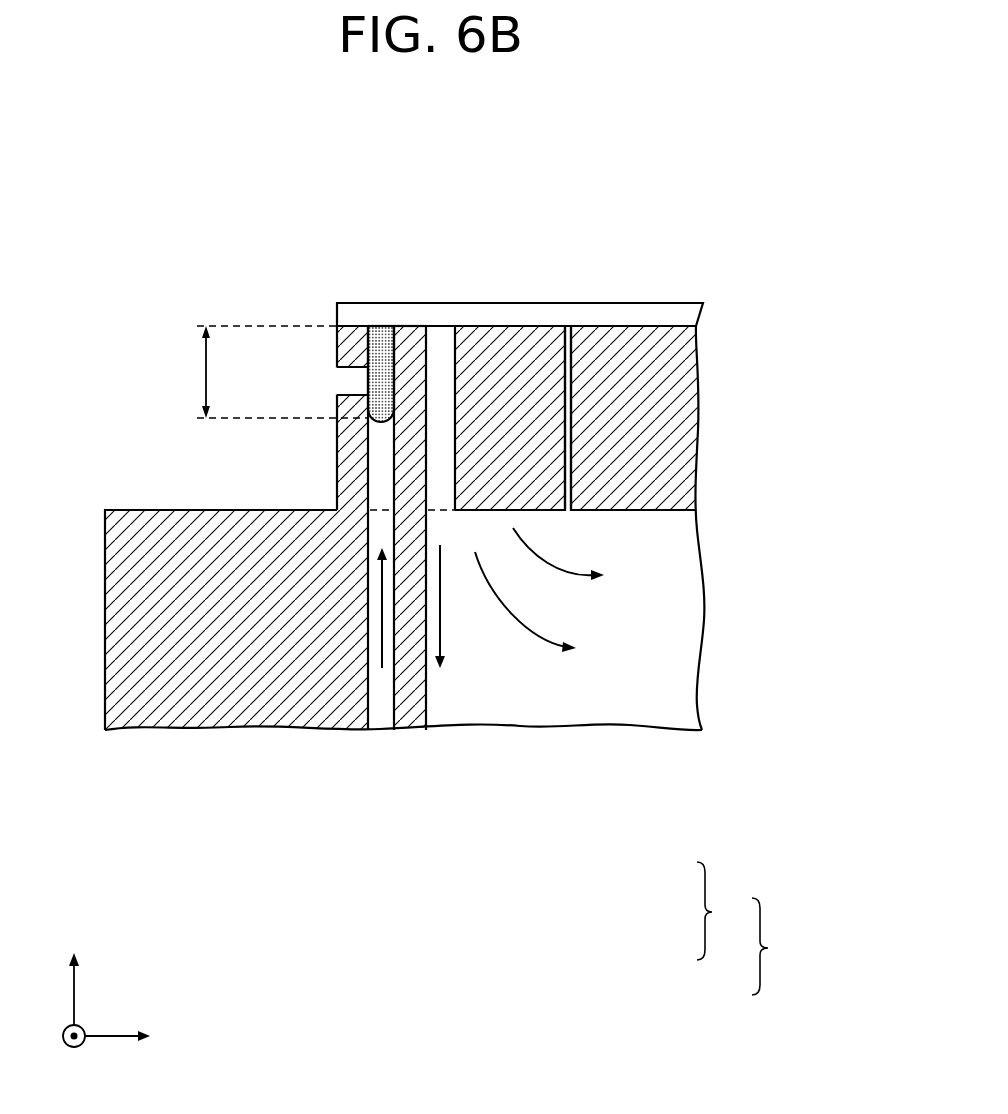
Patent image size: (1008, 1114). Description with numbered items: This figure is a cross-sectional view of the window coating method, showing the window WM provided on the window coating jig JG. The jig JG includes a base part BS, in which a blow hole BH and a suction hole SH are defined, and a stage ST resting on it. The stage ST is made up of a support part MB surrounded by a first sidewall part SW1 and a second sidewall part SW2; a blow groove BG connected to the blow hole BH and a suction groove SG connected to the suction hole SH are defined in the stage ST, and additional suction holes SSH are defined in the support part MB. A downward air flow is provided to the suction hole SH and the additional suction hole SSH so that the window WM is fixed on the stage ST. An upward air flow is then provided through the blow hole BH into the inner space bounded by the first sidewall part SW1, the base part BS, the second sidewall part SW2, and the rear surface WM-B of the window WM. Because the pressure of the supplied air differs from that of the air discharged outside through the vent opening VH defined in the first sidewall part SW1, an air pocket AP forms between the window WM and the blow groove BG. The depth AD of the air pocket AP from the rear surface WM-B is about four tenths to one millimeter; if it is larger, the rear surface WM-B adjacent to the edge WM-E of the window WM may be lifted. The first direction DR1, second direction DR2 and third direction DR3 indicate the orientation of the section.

The base part BS is at (118, 620).
The first sidewall part SW1 is at (348, 466).
The second sidewall part SW2 is at (413, 326).
The support part MB is at (637, 338).
The stage ST is at (699, 911).
The window coating jig JG is at (759, 949).
The window WM is at (677, 318).
The edge of the window WM-E is at (337, 317).
The rear surface of the window WM-B is at (540, 327).
The blow groove BG is at (383, 338).
The air pocket AP is at (380, 353).
The vent opening VH is at (352, 395).
The suction groove SG is at (443, 349).
The additional suction hole SSH is at (567, 330).
The blow hole BH is at (380, 714).
The suction hole SH is at (445, 686).
The depth of the air pocket AD is at (271, 372).
The first direction DR1 is at (75, 1051).
The second direction DR2 is at (138, 1036).
The third direction DR3 is at (75, 976).